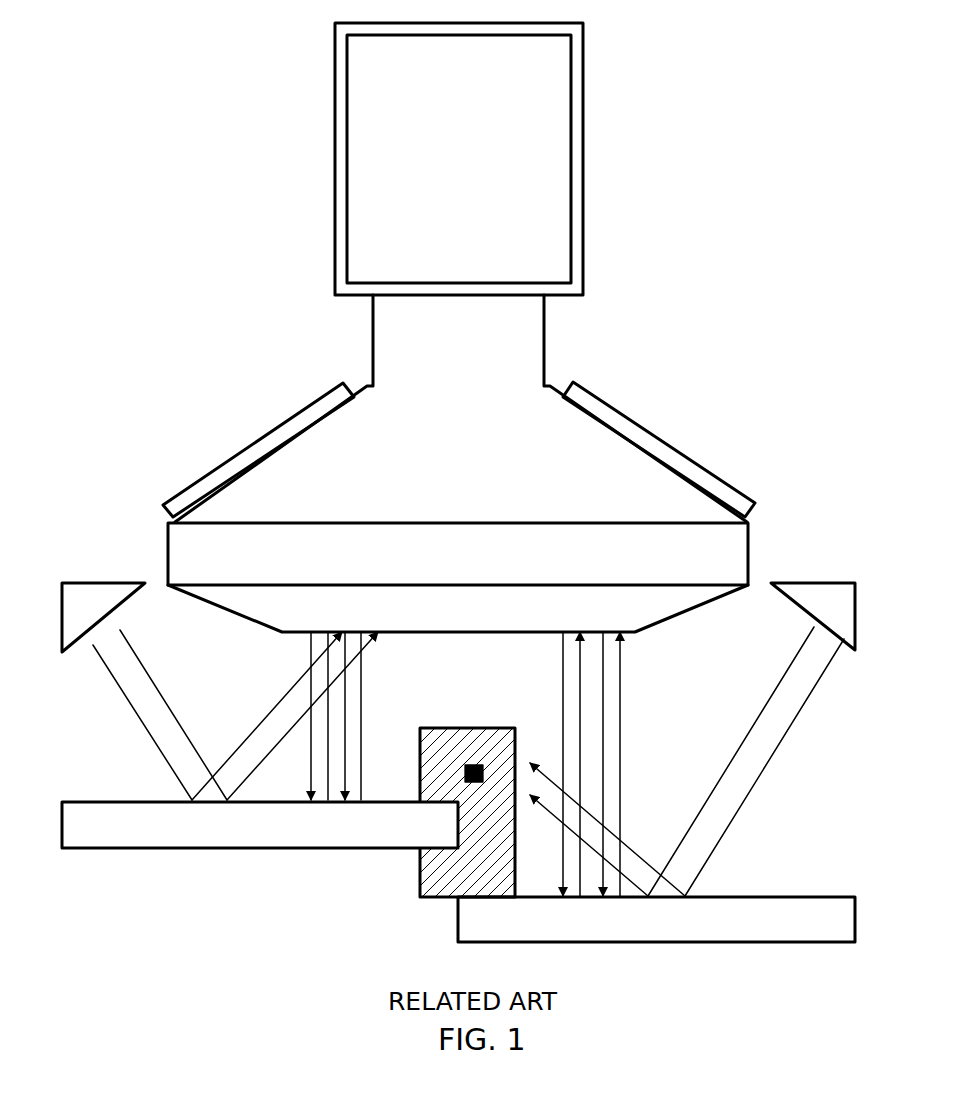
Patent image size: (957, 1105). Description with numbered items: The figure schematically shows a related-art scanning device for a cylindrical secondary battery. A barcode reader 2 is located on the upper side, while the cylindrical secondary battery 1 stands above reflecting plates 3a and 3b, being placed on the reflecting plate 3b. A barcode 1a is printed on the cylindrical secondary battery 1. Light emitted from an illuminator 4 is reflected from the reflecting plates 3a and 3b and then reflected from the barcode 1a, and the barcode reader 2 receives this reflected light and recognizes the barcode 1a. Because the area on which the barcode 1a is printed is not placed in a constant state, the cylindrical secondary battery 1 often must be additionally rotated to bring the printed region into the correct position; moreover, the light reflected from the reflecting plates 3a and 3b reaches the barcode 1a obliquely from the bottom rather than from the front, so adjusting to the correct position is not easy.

The cylindrical secondary battery 1 is at (423, 895).
The barcode 1a is at (475, 765).
The barcode reader 2 is at (525, 141).
The reflecting plate 3a is at (773, 913).
The reflecting plate 3b is at (252, 840).
The illuminator 4 is at (829, 597).